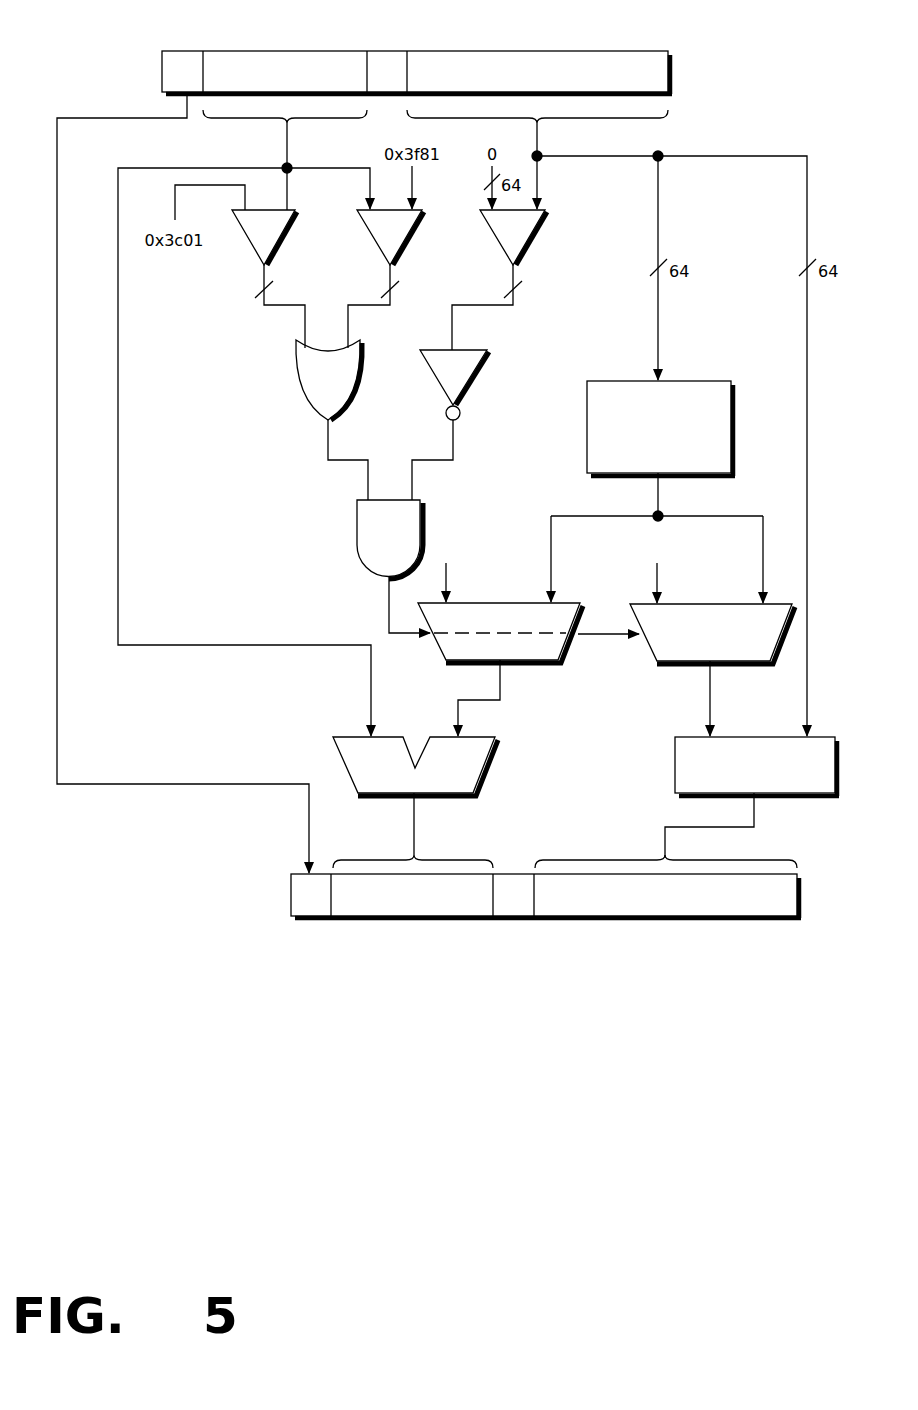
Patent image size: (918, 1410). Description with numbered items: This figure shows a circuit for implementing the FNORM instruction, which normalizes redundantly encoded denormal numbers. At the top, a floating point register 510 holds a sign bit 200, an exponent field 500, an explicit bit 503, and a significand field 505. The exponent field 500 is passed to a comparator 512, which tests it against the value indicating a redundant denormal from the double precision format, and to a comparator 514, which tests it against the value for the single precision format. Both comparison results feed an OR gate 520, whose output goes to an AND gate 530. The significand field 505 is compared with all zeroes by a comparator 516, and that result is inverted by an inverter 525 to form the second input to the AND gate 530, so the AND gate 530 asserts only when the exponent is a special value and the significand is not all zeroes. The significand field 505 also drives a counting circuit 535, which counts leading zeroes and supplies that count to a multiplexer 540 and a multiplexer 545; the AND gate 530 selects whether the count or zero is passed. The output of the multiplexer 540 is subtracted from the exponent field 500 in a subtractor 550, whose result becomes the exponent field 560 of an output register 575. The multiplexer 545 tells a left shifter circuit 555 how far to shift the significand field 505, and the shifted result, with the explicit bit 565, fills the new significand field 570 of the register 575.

The sign bit 200 is at (185, 50).
The exponent field 500 is at (323, 50).
The explicit bit 503 is at (400, 50).
The significand field 505 is at (467, 50).
The floating point register 510 is at (690, 72).
The comparator 512 is at (250, 232).
The comparator 514 is at (376, 232).
The comparator 516 is at (499, 232).
The OR gate 520 is at (314, 385).
The inverter 525 is at (439, 372).
The AND gate 530 is at (375, 535).
The counting circuit 535 is at (697, 471).
The multiplexer 540 is at (518, 655).
The multiplexer 545 is at (730, 655).
The subtractor 550 is at (438, 789).
The left shifter circuit 555 is at (800, 787).
The exponent field 560 is at (464, 919).
The integer bit field of result 565 is at (524, 919).
The significand field 570 is at (604, 919).
The register 575 is at (814, 896).